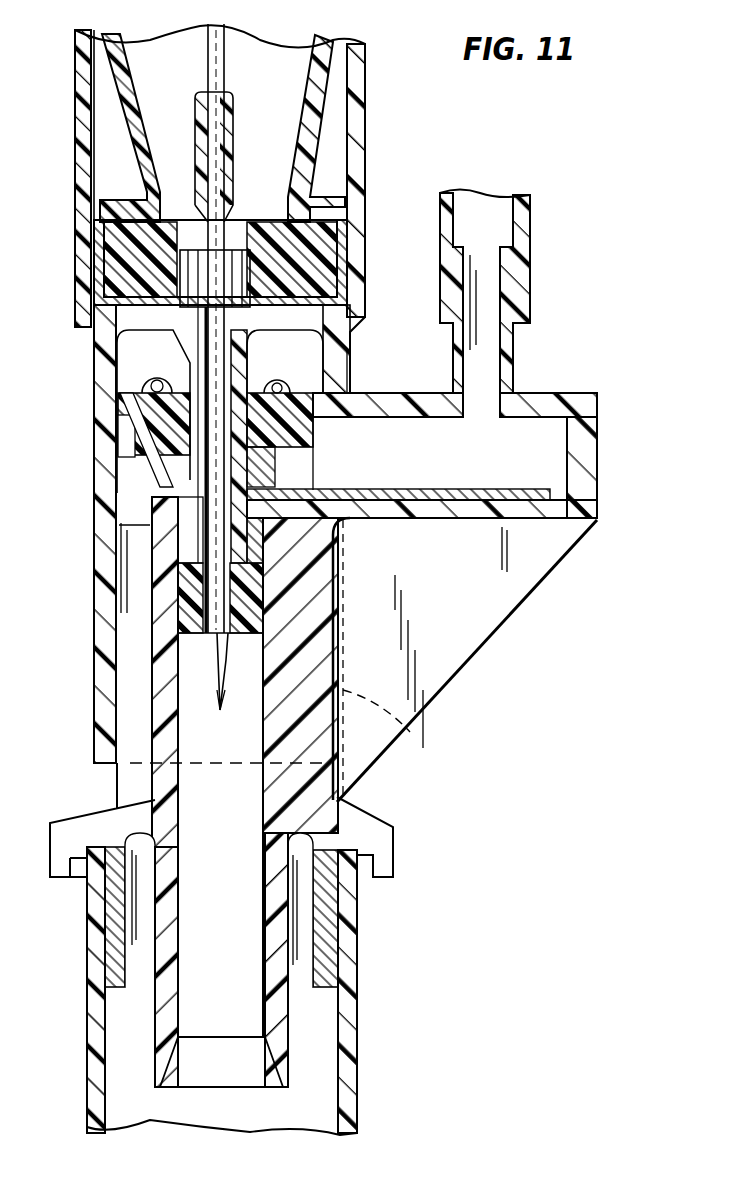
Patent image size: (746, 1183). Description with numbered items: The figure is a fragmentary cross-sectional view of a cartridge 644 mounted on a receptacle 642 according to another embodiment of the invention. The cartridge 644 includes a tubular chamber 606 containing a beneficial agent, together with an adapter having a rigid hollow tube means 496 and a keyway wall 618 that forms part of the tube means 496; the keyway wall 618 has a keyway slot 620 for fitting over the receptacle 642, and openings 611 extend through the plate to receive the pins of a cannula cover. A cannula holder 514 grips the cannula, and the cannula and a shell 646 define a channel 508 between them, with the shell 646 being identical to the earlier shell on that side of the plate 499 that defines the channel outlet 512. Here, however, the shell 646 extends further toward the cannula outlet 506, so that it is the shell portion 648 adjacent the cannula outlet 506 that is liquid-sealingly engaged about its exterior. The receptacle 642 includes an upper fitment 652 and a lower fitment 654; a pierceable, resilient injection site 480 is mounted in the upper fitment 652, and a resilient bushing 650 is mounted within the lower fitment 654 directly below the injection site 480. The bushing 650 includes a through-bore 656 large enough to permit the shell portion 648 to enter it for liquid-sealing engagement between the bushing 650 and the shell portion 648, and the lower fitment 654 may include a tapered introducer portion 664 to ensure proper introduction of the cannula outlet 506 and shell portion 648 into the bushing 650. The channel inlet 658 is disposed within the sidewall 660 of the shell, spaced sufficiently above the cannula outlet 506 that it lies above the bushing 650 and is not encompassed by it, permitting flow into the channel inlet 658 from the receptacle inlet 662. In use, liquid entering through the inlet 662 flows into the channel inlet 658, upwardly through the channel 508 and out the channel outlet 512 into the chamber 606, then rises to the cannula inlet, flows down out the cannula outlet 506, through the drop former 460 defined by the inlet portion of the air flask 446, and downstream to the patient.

The tubular chamber 606 is at (348, 88).
The cannula holder 514 is at (226, 140).
The channel outlet 512 is at (226, 205).
The cartridge 644 is at (392, 148).
The tube means 496 is at (358, 178).
The receptacle inlet 662 is at (495, 290).
The shell 646 is at (350, 338).
The upper fitment 652 is at (555, 393).
The injection site 480 is at (285, 408).
The openings 611 is at (113, 350).
The plate 499 is at (150, 375).
The receptacle 642 is at (597, 468).
The channel inlet 658 is at (315, 494).
The channel 508 is at (207, 457).
The tapered introducer portion 664 is at (198, 530).
The sidewall 660 is at (192, 545).
The lower fitment 654 is at (540, 507).
The shell portion 648 is at (267, 575).
The resilient bushing 650 is at (230, 625).
The through-bore 656 is at (245, 652).
The keyway wall 618 is at (98, 640).
The keyway slot 620 is at (412, 732).
The cannula outlet 506 is at (219, 711).
The air flask 446 is at (357, 1009).
The drop former 460 is at (284, 1073).